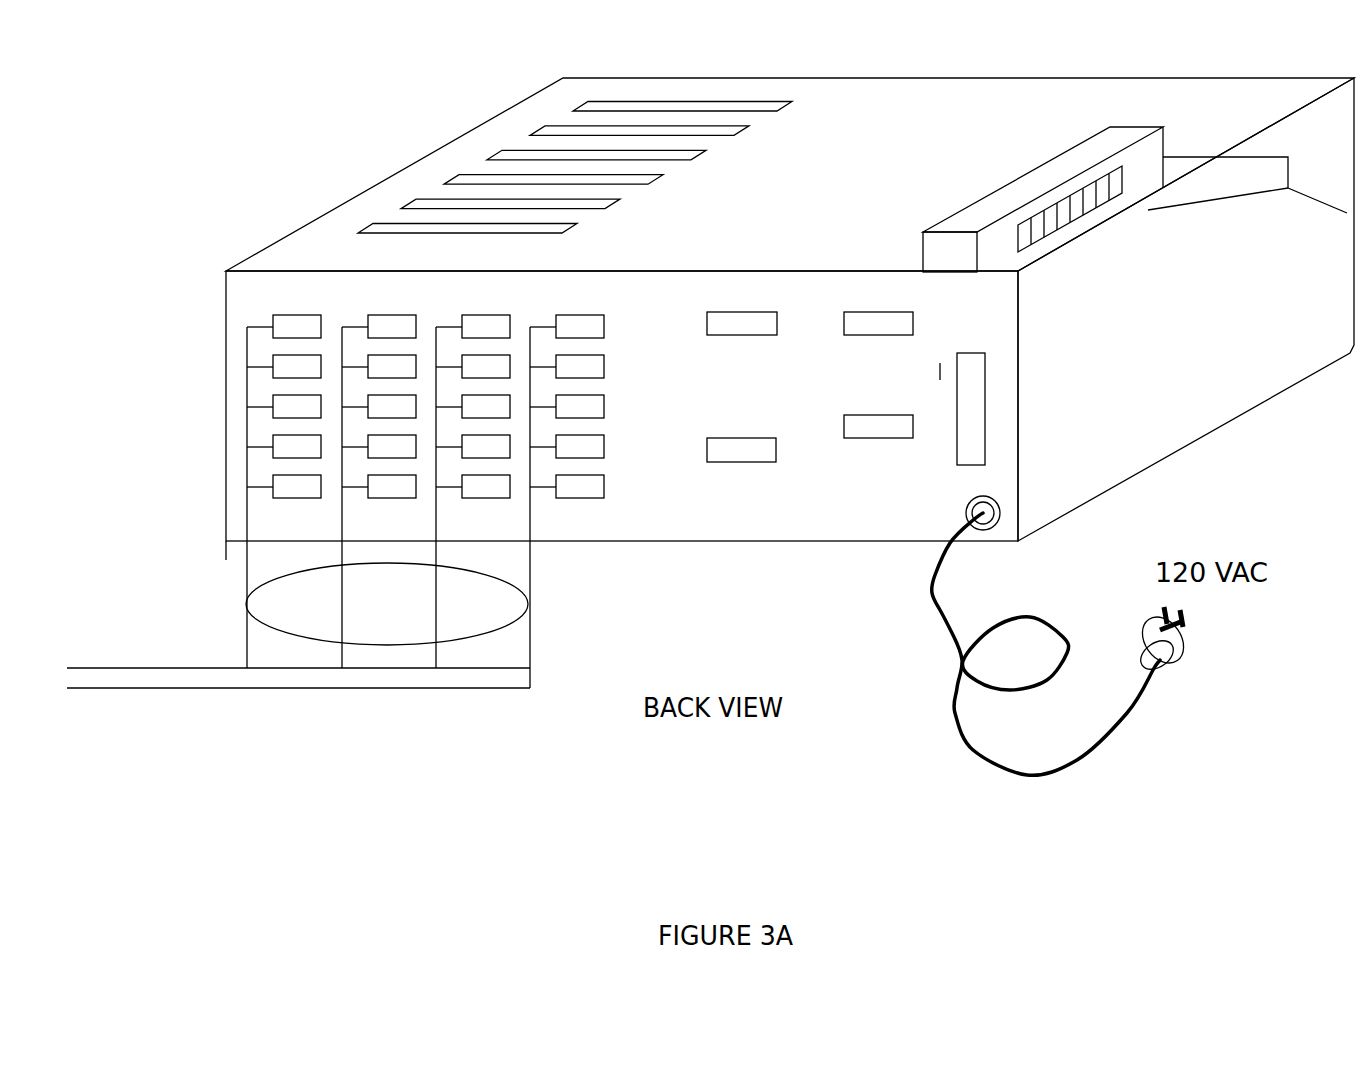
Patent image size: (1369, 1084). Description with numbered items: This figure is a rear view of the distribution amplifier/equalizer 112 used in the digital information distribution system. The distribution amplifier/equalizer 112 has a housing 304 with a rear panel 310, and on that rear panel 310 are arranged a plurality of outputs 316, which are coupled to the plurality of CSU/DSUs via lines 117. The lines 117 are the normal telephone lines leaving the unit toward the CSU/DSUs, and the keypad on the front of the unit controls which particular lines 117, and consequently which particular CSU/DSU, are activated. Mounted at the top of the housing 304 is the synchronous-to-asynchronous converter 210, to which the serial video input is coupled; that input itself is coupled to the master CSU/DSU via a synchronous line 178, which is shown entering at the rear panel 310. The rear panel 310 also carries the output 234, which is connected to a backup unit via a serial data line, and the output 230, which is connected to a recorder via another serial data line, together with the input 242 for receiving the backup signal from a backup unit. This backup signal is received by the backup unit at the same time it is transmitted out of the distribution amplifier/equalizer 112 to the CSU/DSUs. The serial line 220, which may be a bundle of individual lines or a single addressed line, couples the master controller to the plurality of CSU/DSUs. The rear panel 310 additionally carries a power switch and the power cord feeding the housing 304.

The distribution amplifier/equalizer 112 is at (757, 174).
The synchronous-to-asynchronous converter 210 is at (1015, 178).
The RS-232 line 220 is at (247, 395).
The output 234 is at (707, 323).
The synchronous line 178 is at (845, 323).
The output 230 is at (707, 450).
The input 242 is at (843, 422).
The plurality of outputs 316 is at (168, 526).
The lines 117 is at (527, 603).
The rear panel 310 is at (837, 543).
The housing 304 is at (1143, 390).